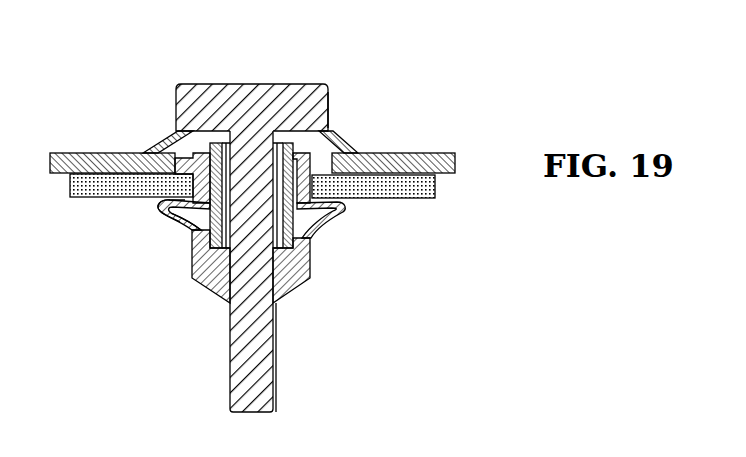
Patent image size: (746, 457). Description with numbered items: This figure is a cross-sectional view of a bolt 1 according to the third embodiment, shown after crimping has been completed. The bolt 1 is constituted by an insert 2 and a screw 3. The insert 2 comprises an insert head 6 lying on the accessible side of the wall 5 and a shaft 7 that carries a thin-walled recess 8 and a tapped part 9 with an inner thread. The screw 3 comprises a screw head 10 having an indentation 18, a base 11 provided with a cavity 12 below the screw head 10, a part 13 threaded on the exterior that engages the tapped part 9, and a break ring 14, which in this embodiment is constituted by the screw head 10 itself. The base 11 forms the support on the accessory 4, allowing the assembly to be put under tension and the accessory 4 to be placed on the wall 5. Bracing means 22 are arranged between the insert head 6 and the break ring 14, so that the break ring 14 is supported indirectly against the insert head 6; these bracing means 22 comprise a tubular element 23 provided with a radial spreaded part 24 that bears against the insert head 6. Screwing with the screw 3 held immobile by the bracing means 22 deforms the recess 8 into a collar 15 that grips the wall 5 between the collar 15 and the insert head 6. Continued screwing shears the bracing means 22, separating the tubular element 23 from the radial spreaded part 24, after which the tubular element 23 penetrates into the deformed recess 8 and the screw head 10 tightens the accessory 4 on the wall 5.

The bolt 1 is at (235, 207).
The insert 2 is at (245, 222).
The screw 3 is at (203, 76).
The accessory 4 is at (66, 155).
The wall 5 is at (70, 180).
The insert head 6 is at (177, 134).
The shaft 7 is at (154, 231).
The recess 8 is at (161, 204).
The tapped part 9 is at (228, 302).
The screw head 10 is at (267, 213).
The base 11 is at (354, 145).
The cavity 12 is at (182, 140).
The threaded part 13 is at (276, 321).
The break ring 14 is at (267, 213).
The collar 15 is at (340, 206).
The indentation 18 is at (330, 90).
The bracing means 22 is at (198, 218).
The tubular element 23 is at (308, 237).
The radial spreaded part 24 is at (297, 150).